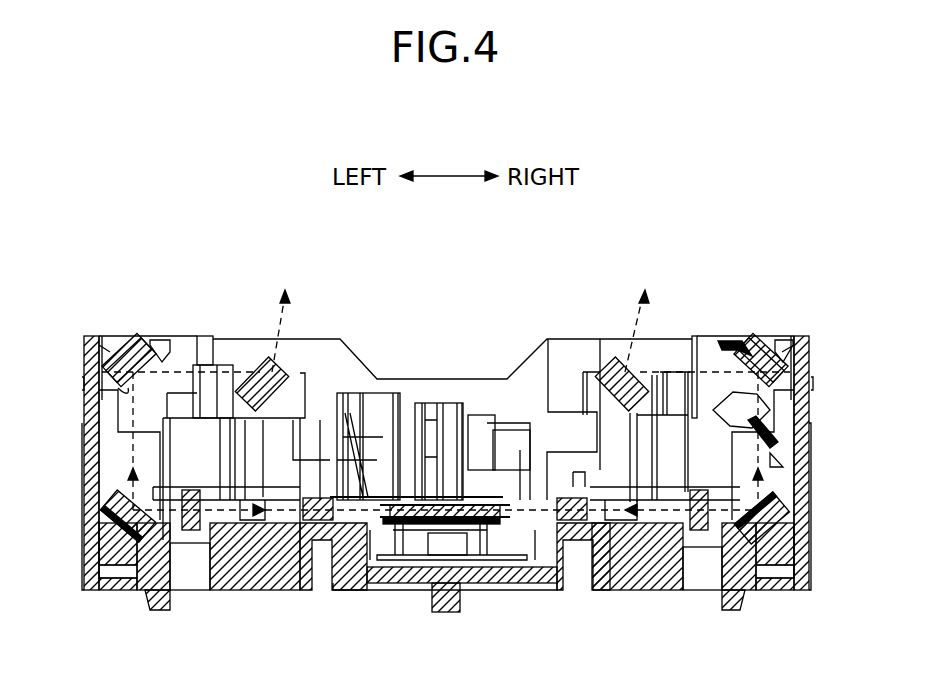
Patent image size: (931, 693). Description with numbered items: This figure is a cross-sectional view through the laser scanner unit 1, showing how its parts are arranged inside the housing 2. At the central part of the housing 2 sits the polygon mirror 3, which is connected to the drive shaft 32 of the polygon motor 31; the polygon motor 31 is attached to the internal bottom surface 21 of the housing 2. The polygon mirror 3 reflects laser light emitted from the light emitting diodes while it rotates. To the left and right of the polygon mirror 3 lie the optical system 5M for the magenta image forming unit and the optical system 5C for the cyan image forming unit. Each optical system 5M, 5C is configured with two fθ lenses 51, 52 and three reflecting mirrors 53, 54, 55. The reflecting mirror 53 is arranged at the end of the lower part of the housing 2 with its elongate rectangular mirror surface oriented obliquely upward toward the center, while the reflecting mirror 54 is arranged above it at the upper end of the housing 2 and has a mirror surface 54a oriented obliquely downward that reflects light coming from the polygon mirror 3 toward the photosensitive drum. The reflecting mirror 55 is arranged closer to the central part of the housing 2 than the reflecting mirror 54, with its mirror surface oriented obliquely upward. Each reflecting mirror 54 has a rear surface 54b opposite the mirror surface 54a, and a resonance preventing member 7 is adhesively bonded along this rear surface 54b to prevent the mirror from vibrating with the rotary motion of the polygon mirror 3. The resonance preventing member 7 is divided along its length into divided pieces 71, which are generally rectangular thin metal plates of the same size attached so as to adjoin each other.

The laser scanner unit 1 is at (822, 227).
The housing 2 is at (784, 594).
The polygon mirror 3 is at (474, 520).
The optical system 5M is at (207, 340).
The optical system 5C is at (704, 342).
The resonance preventing member 7 is at (99, 349).
The internal bottom surface 21 is at (540, 560).
The polygon motor 31 is at (450, 548).
The drive shaft 32 is at (447, 524).
The fθ lens 51 is at (318, 522).
The fθ lens 52 is at (190, 532).
The reflecting mirror 53 is at (105, 548).
The reflecting mirror 54 is at (148, 335).
The mirror surface 54a is at (127, 392).
The rear surface 54b is at (126, 336).
The reflecting mirror 55 is at (313, 350).
The divided piece 71 is at (110, 350).